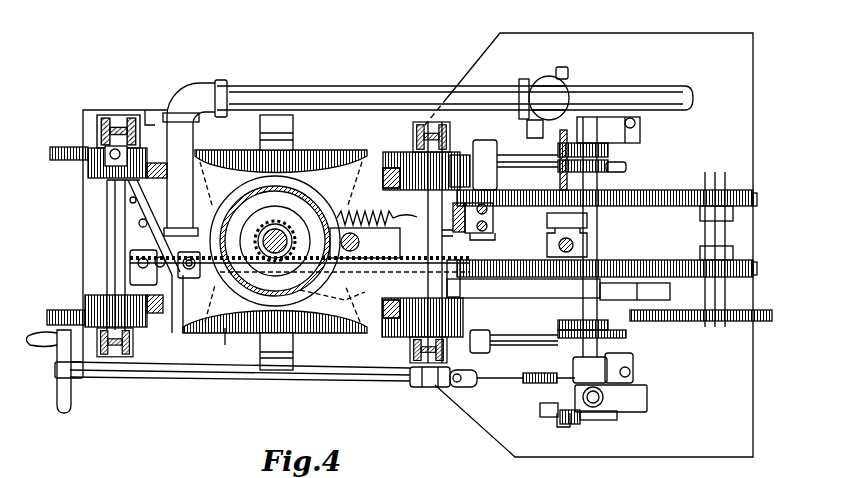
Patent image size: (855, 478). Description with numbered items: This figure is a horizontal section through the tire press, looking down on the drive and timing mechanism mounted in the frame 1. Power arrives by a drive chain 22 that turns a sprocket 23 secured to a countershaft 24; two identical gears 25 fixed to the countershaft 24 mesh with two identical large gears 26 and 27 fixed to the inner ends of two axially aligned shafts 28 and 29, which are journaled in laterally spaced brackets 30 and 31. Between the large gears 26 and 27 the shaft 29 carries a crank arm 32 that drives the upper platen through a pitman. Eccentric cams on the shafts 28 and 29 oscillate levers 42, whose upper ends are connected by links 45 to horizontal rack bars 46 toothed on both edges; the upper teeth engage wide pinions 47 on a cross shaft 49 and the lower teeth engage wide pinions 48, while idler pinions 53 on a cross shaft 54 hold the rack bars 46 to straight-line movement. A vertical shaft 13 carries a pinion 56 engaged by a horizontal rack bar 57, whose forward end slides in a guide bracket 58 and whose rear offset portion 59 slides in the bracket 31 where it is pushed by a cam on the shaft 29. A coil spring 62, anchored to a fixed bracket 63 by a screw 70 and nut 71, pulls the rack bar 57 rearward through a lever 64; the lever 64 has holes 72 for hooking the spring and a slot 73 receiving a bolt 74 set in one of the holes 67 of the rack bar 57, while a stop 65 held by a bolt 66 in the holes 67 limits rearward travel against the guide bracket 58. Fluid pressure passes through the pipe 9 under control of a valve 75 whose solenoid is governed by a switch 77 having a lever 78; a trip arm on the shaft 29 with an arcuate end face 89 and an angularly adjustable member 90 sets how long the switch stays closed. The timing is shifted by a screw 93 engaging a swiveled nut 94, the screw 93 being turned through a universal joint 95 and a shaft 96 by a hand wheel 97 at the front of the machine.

The frame 1 is at (150, 115).
The pipe 9 is at (391, 88).
The valve 75 is at (545, 92).
The bracket 30 is at (640, 132).
The lever 42 is at (620, 172).
The large gear 26 is at (652, 198).
The gear 25 is at (757, 199).
The countershaft 24 is at (726, 290).
The drive chain 22 is at (766, 322).
The sprocket 23 is at (709, 312).
The large gear 27 is at (672, 262).
The shaft 28 is at (590, 220).
The crank arm 32 is at (590, 245).
The fixed bracket 63 is at (493, 216).
The nut 71 is at (497, 236).
The screw 70 is at (445, 234).
The cross shaft 54 is at (442, 252).
The offset portion 59 is at (490, 290).
The wide pinion 48 is at (392, 216).
The rack bar 46 is at (335, 153).
The idler pinion 53 is at (406, 152).
The link 45 is at (522, 148).
The wide pinion 47 is at (88, 174).
The holes 72 is at (128, 200).
The lever 64 is at (131, 219).
The cross shaft 49 is at (108, 239).
The bolt 74 is at (130, 244).
The holes 67 is at (176, 272).
The stop 65 is at (183, 258).
The pinion 56 is at (235, 202).
The vertical shaft 13 is at (283, 229).
The coil spring 62 is at (373, 234).
The rack bar 57 is at (362, 295).
The guide bracket 58 is at (226, 330).
The bolt 66 is at (180, 334).
The slot 73 is at (133, 345).
The shaft 96 is at (340, 379).
The hand wheel 97 is at (70, 402).
The universal joint 95 is at (463, 388).
The screw 93 is at (488, 384).
The arcuate end face 89 is at (545, 411).
The adjustable member 90 is at (553, 424).
The shaft 29 is at (578, 426).
The lever 78 is at (615, 419).
The switch 77 is at (650, 403).
The bracket 31 is at (635, 371).
The nut 94 is at (600, 360).